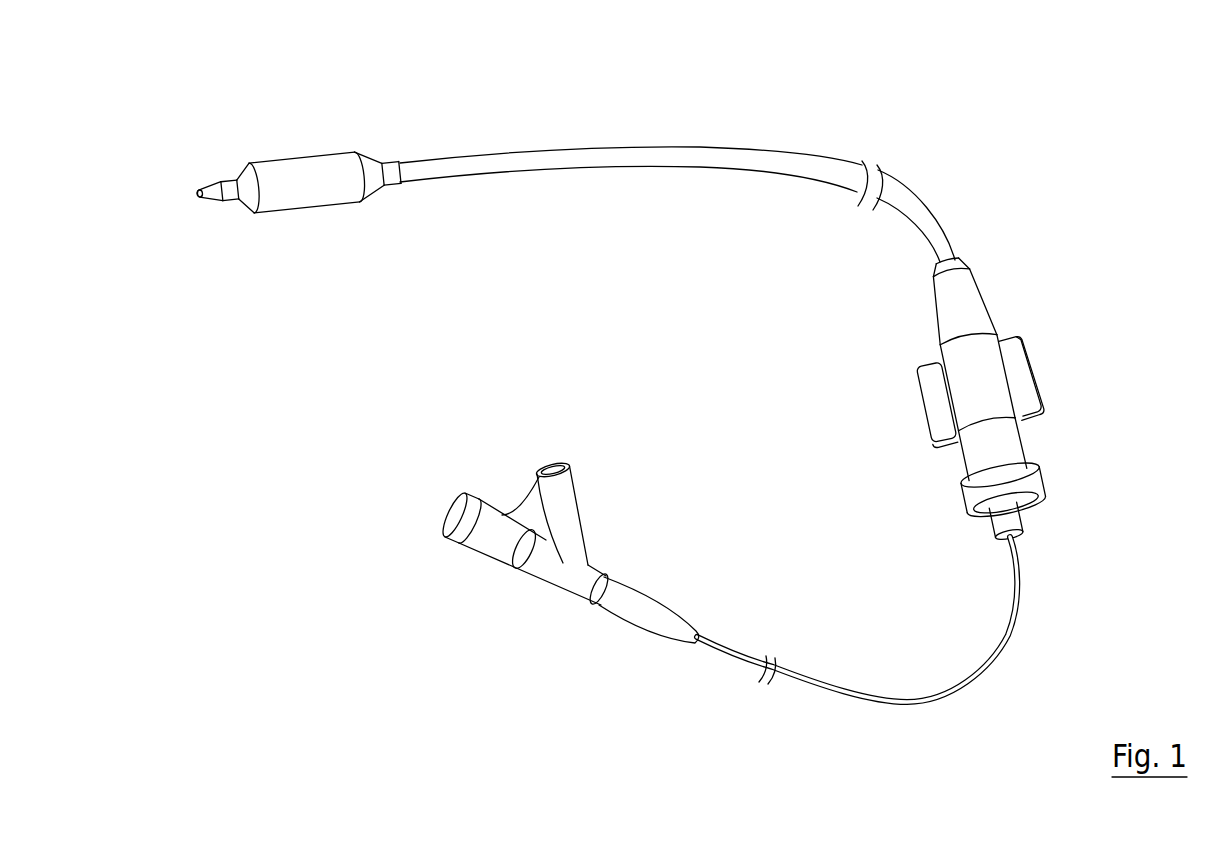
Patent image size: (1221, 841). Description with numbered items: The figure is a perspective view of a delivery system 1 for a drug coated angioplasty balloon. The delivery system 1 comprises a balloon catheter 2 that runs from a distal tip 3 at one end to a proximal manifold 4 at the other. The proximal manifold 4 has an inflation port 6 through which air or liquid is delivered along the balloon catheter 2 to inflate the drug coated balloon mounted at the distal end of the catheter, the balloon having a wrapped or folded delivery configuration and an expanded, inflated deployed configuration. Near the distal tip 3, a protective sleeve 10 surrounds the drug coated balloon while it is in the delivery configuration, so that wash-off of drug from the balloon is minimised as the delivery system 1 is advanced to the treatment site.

The delivery system 1 is at (986, 221).
The balloon catheter 2 is at (1010, 645).
The distal tip 3 is at (195, 194).
The proximal manifold 4 is at (570, 576).
The inflation port 6 is at (567, 510).
The protective sleeve 10 is at (303, 170).